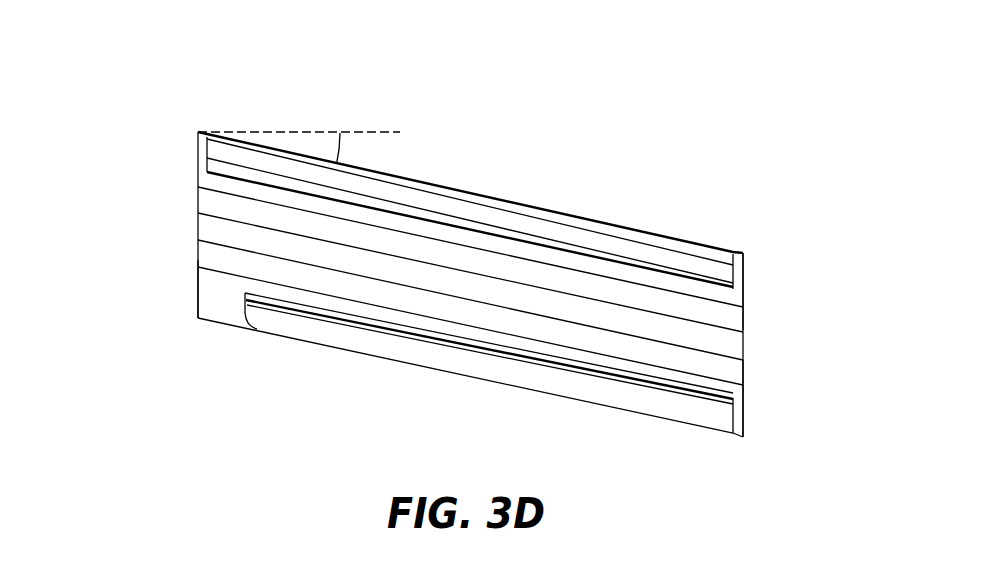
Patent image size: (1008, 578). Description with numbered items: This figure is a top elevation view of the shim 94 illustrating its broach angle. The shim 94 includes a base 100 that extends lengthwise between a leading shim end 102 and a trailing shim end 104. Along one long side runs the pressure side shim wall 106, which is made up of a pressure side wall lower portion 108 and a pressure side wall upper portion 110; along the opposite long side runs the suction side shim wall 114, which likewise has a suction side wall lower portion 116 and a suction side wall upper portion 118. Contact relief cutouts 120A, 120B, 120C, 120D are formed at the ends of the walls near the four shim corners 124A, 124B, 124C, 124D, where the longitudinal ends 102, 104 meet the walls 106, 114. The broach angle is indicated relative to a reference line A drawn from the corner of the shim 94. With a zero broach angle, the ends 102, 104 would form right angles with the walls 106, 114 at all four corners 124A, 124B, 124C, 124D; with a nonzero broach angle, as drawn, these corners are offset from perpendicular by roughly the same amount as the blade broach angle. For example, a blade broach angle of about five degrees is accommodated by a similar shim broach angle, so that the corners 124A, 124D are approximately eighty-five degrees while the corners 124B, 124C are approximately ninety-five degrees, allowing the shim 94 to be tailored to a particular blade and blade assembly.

The shim 94 is at (787, 147).
The base 100 is at (197, 217).
The leading shim end 102 is at (168, 253).
The trailing shim end 104 is at (760, 345).
The pressure side shim wall 106 is at (323, 353).
The pressure side wall lower portion 108 is at (502, 330).
The pressure side wall upper portion 110 is at (618, 397).
The suction side shim wall 114 is at (522, 178).
The suction side wall lower portion 116 is at (548, 265).
The suction side wall upper portion 118 is at (653, 260).
The contact relief cutout 120A is at (225, 313).
The contact relief cutout 120B is at (741, 412).
The contact relief cutout 120C is at (197, 151).
The contact relief cutout 120D is at (747, 277).
The shim corner 124A is at (187, 312).
The shim corner 124B is at (762, 400).
The shim corner 124C is at (192, 155).
The shim corner 124D is at (767, 282).
The reference axis A is at (358, 132).